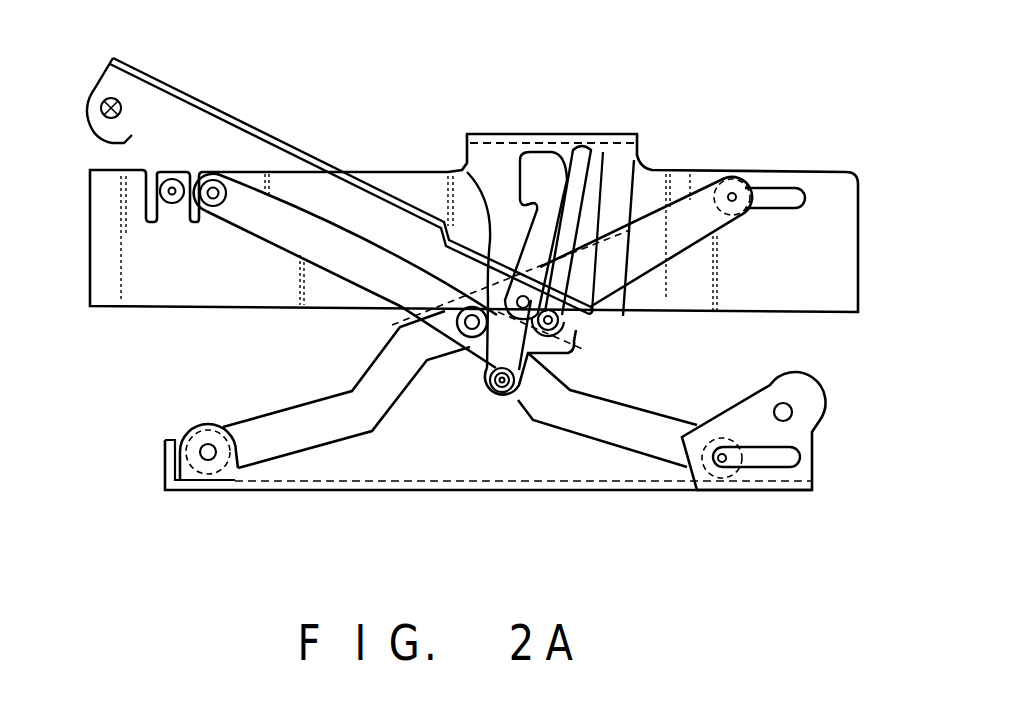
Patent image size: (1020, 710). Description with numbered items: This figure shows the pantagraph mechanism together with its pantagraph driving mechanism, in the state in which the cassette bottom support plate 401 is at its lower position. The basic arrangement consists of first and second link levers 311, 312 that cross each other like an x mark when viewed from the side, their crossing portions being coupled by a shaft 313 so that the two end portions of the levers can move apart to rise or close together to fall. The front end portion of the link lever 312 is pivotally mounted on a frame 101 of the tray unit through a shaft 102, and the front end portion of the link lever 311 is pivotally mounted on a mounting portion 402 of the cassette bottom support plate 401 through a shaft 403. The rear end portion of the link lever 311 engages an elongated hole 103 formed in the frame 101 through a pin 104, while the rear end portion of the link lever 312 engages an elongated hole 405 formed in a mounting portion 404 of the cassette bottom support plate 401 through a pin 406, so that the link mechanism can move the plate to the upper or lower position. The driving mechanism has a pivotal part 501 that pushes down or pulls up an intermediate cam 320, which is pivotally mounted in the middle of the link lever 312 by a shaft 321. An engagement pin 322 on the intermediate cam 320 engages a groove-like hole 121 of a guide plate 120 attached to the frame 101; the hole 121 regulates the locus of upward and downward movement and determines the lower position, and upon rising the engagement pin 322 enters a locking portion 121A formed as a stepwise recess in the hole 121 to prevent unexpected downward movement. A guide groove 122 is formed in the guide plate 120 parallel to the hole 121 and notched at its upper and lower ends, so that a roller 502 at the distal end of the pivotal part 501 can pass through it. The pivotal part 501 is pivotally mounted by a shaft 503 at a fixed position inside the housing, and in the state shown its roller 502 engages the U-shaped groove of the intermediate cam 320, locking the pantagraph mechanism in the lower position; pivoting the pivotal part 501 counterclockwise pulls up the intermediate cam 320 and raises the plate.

The frame 101 is at (133, 295).
The shaft 102 is at (210, 217).
The elongated hole 103 is at (772, 212).
The pin 104 is at (734, 195).
The guide plate 120 is at (480, 148).
The hole 121 is at (550, 150).
The locking portion 121A is at (529, 250).
The guide groove 122 is at (598, 150).
The first link lever 311 is at (282, 417).
The second link lever 312 is at (603, 395).
The shaft 313 is at (470, 340).
The intermediate cam 320 is at (525, 395).
The shaft 321 is at (500, 400).
The engagement pin 322 is at (468, 173).
The cassette bottom support plate 401 is at (467, 495).
The mounting portion 402 is at (190, 430).
The shaft 403 is at (212, 460).
The mounting portion 404 is at (778, 380).
The elongated hole 405 is at (792, 468).
The pin 406 is at (727, 470).
The pivotal part 501 is at (172, 85).
The roller 502 is at (562, 330).
The shaft 503 is at (122, 104).